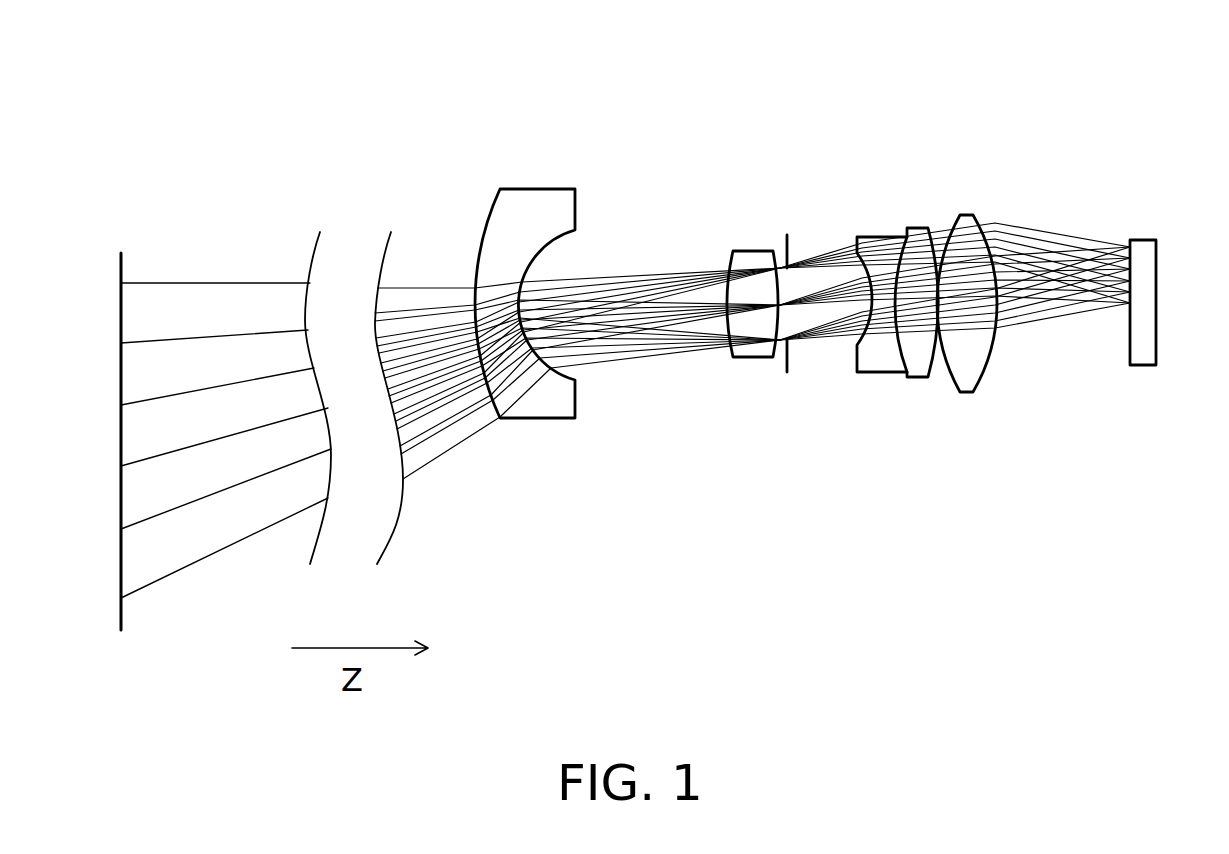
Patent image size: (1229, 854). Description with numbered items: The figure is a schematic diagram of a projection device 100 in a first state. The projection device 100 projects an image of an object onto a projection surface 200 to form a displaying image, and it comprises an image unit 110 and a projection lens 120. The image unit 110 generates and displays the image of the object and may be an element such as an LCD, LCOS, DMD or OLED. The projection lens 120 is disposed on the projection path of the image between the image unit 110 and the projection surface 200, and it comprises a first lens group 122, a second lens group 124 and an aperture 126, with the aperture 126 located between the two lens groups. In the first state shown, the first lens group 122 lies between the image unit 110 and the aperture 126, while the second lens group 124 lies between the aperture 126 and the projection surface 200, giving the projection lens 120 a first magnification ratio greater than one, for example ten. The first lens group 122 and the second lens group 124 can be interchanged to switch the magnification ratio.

The projection device 100 is at (1101, 88).
The image unit 110 is at (1144, 248).
The projection lens 120 is at (1005, 171).
The first lens group 122 is at (987, 398).
The second lens group 124 is at (778, 444).
The aperture 126 is at (803, 390).
The projection surface 200 is at (137, 323).